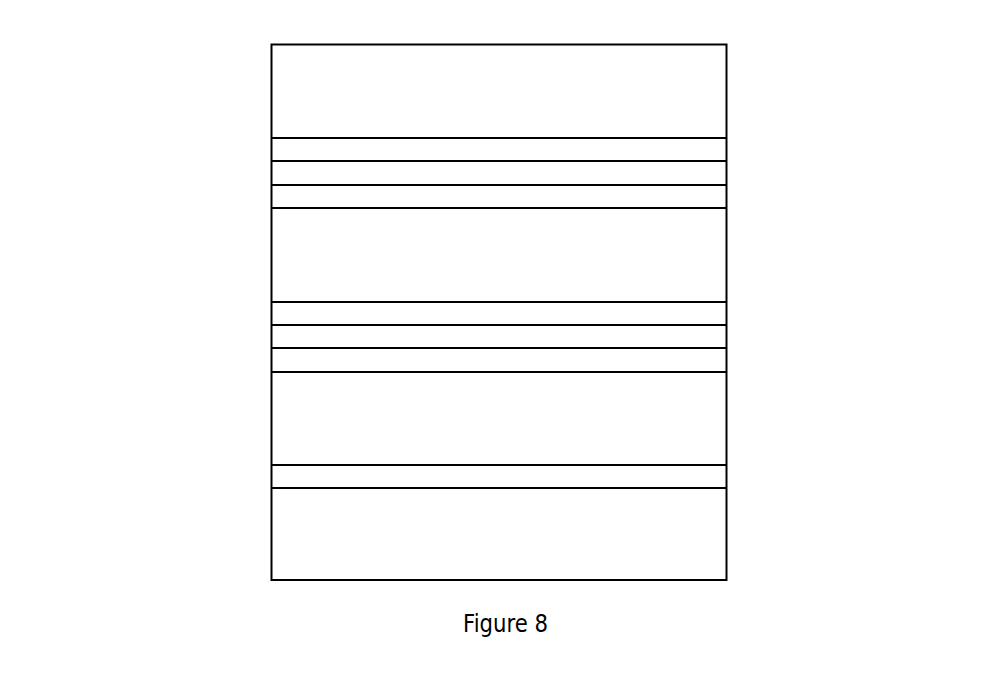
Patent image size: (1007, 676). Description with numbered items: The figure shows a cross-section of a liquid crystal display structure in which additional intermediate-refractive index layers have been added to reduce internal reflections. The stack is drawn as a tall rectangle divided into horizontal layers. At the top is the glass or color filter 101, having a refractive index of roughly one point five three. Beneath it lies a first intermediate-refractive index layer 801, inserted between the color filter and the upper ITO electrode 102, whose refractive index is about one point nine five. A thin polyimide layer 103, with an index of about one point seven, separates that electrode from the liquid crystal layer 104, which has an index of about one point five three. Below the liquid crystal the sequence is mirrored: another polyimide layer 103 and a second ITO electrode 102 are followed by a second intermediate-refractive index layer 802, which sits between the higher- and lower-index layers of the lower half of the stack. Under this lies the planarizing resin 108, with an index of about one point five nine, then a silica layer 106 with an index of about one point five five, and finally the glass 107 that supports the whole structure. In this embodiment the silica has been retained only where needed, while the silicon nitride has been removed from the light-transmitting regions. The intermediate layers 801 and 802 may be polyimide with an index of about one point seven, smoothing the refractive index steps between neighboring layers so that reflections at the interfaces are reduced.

The glass or color filter 101 is at (305, 76).
The ITO electrode 102 is at (282, 170).
The polyimide layer 103 is at (282, 193).
The liquid crystal layer 104 is at (305, 251).
The silica layer 106 is at (282, 477).
The glass 107 is at (293, 535).
The planarizing resin 108 is at (305, 405).
The intermediate-refractive index layer 801 is at (723, 149).
The intermediate-refractive index layer 802 is at (712, 360).